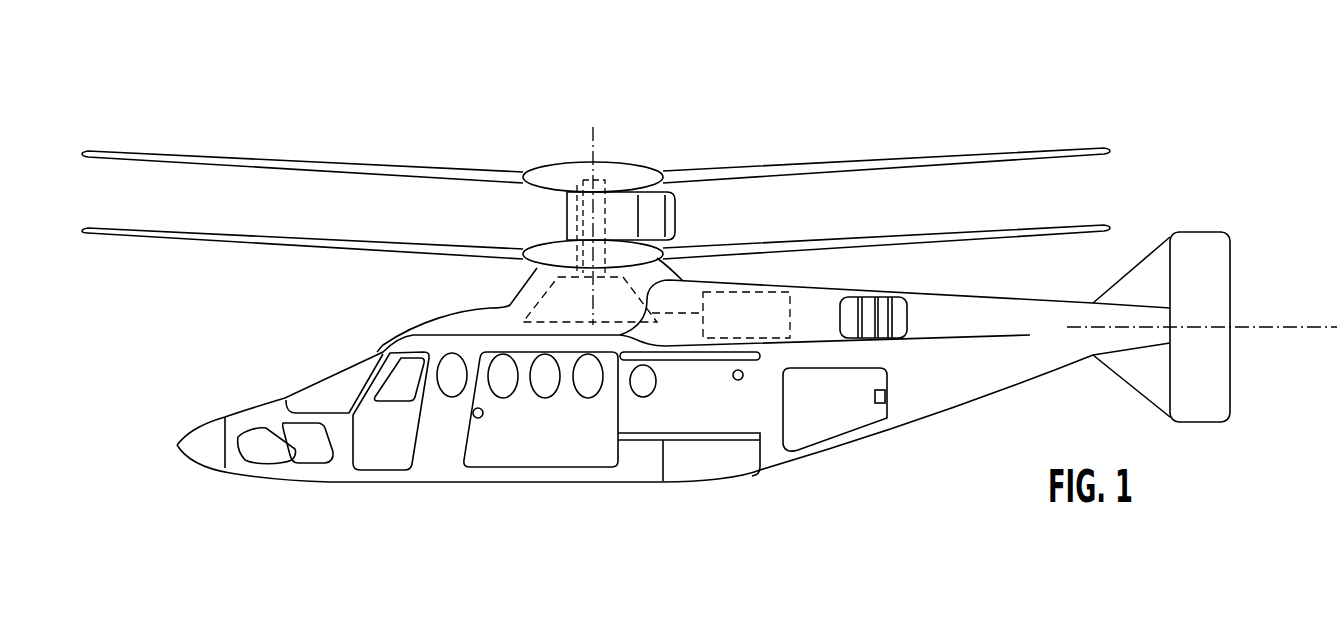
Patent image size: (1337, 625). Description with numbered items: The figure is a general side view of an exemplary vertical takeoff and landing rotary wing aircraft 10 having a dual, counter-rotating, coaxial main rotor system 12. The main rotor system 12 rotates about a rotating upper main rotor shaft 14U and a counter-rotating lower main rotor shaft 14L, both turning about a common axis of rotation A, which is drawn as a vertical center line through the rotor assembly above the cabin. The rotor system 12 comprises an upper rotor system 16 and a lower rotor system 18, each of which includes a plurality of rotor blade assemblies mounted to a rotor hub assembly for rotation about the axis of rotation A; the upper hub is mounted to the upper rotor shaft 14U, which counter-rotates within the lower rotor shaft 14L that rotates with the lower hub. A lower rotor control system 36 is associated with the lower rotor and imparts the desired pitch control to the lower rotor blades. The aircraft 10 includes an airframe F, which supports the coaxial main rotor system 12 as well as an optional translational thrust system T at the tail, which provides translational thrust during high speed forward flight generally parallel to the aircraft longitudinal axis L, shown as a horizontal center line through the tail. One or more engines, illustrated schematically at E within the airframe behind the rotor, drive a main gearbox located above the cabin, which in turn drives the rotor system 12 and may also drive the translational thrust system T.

The rotary wing aircraft 10 is at (709, 282).
The main rotor system 12 is at (596, 210).
The upper main rotor shaft 14U is at (605, 222).
The lower main rotor shaft 14L is at (591, 226).
The upper rotor system 16 is at (664, 165).
The lower rotor system 18 is at (508, 274).
The lower rotor control system 36 is at (499, 194).
The axis of rotation A is at (595, 143).
The engine E is at (753, 324).
The airframe F is at (542, 443).
The translational thrust system T is at (1212, 210).
The aircraft longitudinal axis L is at (1300, 328).